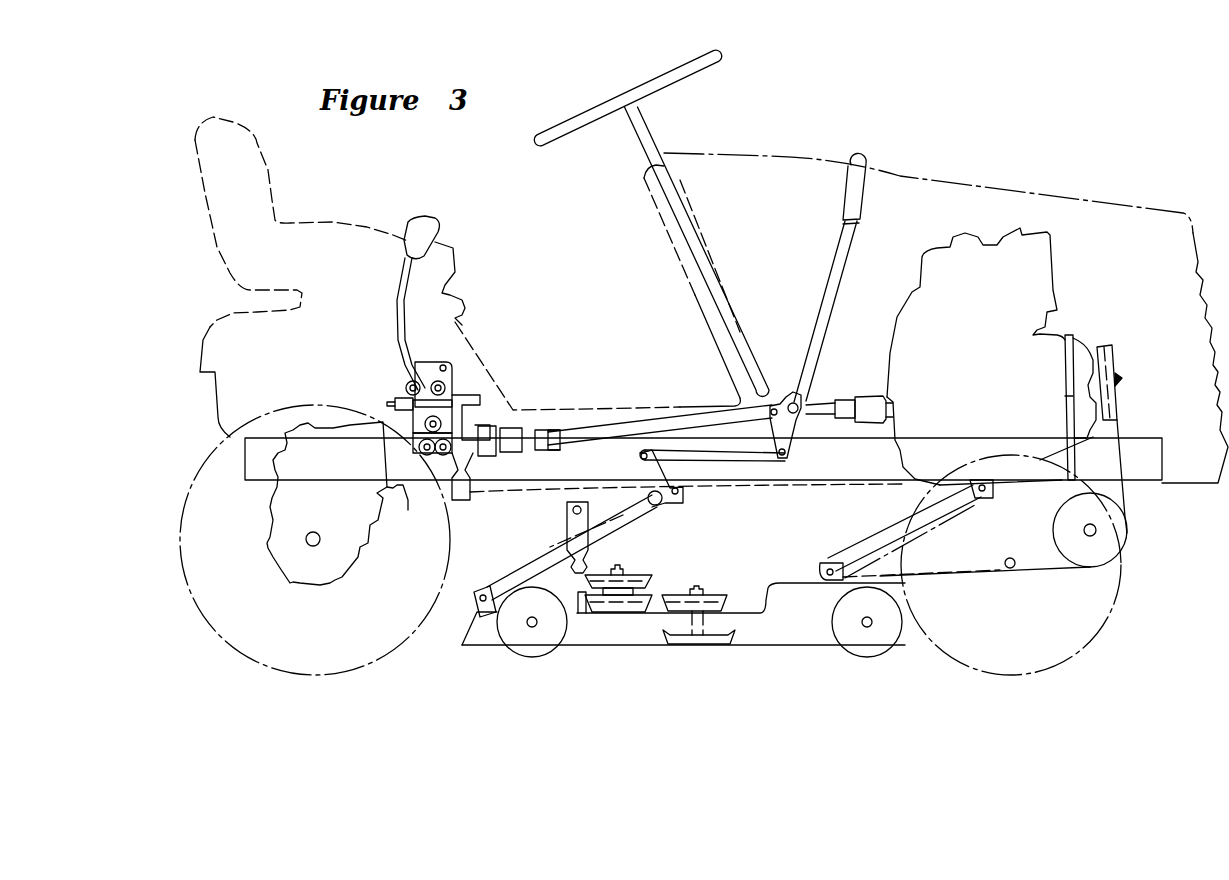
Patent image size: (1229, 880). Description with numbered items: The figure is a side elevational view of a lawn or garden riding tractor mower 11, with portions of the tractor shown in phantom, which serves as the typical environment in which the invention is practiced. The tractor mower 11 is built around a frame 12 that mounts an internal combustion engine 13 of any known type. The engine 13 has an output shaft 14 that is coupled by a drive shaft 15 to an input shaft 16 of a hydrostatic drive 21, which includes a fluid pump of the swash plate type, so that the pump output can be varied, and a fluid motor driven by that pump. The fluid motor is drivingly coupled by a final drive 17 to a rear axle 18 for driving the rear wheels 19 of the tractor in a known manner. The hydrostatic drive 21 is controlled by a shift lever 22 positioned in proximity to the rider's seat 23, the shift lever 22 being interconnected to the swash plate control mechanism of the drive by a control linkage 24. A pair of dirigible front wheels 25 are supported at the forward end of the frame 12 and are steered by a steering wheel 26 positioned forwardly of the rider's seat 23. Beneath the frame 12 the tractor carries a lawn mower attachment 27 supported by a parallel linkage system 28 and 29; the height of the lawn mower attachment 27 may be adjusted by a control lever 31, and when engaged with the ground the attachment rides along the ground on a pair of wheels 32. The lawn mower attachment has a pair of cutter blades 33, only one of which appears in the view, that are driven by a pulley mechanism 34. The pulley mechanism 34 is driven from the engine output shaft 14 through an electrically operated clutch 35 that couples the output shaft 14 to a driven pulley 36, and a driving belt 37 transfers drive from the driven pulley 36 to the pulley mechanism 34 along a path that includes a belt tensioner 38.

The tractor mower 11 is at (975, 179).
The frame 12 is at (1160, 463).
The internal combustion engine 13 is at (1052, 292).
The output shaft 14 is at (882, 404).
The drive shaft 15 is at (672, 404).
The input shaft 16 is at (480, 424).
The final drive 17 is at (365, 540).
The rear axle 18 is at (305, 540).
The rear wheels 19 is at (180, 483).
The hydrostatic drive 21 is at (405, 490).
The shift lever 22 is at (398, 322).
The rider's seat 23 is at (340, 204).
The control linkage 24 is at (460, 372).
The dirigible front wheels 25 is at (1075, 655).
The steering wheel 26 is at (597, 140).
The lawn mower attachment 27 is at (758, 645).
The parallel linkage system 28 is at (497, 567).
The parallel linkage system 29 is at (877, 537).
The control lever 31 is at (822, 298).
The wheels 32 is at (526, 652).
The cutter blades 33 is at (688, 648).
The pulley mechanism 34 is at (636, 577).
The electrically operated clutch 35 is at (1078, 335).
The driven pulley 36 is at (1122, 380).
The driving belt 37 is at (925, 582).
The belt tensioner 38 is at (1133, 533).